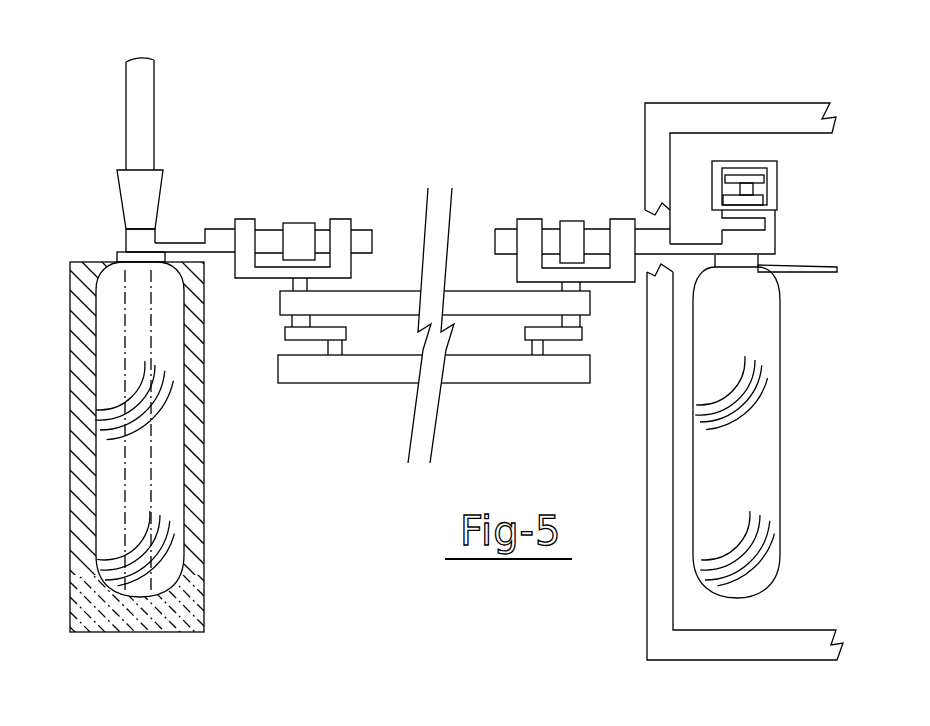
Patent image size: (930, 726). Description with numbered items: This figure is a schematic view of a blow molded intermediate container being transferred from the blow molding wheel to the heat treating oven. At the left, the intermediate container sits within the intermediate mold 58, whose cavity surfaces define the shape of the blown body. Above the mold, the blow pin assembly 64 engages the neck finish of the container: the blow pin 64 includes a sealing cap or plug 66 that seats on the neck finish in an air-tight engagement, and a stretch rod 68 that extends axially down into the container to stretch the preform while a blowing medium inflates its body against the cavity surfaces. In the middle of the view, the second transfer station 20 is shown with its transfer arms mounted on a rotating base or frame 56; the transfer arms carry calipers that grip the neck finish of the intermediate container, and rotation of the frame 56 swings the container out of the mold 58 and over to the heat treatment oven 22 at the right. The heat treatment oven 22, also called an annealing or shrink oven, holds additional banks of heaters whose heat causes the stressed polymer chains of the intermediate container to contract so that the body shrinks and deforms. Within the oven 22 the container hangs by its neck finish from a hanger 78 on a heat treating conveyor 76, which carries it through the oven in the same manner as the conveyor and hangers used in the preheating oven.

The second transfer station 20 is at (414, 171).
The heat treatment oven 22 is at (747, 106).
The rotating base 56 is at (332, 374).
The intermediate mold 58 is at (195, 498).
The blow pin assembly 64 is at (150, 103).
The sealing cap 66 is at (157, 188).
The stretch rod 68 is at (125, 328).
The heat treating conveyor 76 is at (778, 183).
The hanger 78 is at (768, 214).